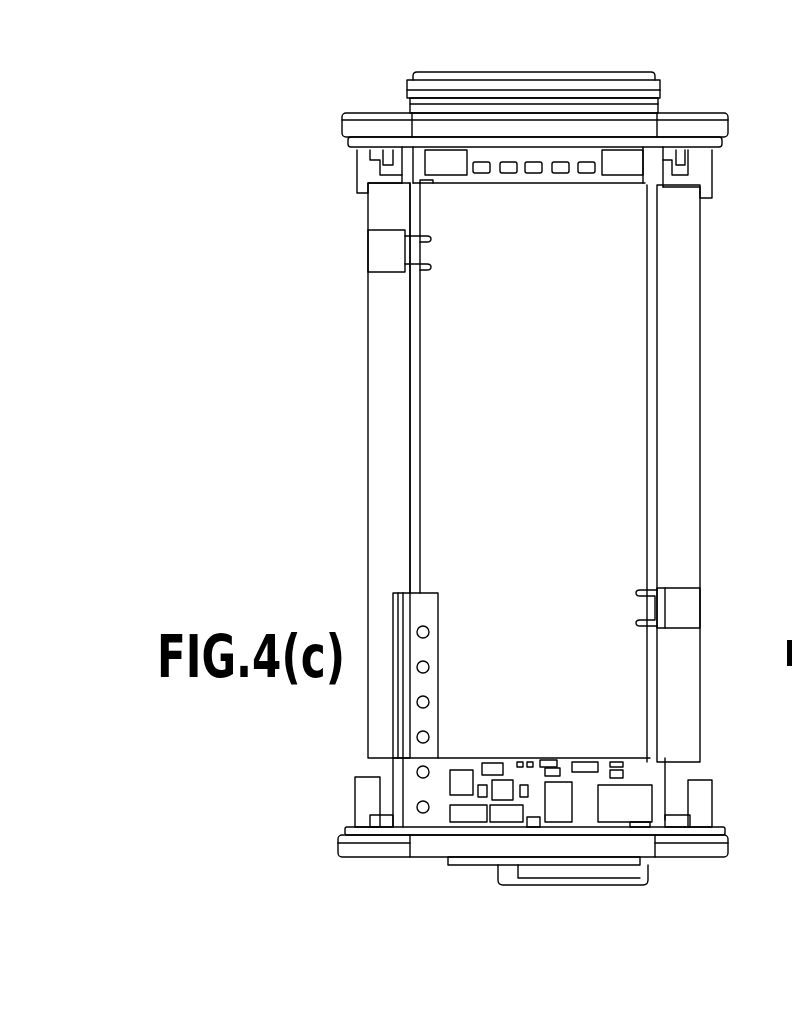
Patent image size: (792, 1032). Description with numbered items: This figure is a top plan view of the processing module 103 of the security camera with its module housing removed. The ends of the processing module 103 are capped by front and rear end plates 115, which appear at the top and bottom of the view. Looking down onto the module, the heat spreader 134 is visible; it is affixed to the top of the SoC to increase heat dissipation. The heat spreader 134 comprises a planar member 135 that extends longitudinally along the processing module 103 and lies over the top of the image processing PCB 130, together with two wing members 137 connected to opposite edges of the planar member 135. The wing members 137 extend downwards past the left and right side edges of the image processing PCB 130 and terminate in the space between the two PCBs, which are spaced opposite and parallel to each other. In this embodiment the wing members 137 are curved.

The processing module 103 is at (735, 136).
The end plate 115 is at (355, 127).
The image processing PCB 130 is at (653, 773).
The heat spreader 134 is at (542, 505).
The planar member 135 is at (551, 449).
The wing member 137 is at (388, 543).